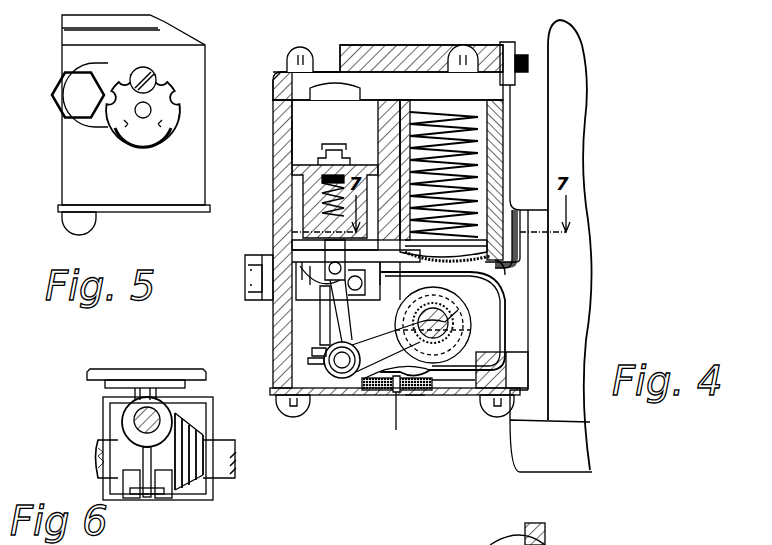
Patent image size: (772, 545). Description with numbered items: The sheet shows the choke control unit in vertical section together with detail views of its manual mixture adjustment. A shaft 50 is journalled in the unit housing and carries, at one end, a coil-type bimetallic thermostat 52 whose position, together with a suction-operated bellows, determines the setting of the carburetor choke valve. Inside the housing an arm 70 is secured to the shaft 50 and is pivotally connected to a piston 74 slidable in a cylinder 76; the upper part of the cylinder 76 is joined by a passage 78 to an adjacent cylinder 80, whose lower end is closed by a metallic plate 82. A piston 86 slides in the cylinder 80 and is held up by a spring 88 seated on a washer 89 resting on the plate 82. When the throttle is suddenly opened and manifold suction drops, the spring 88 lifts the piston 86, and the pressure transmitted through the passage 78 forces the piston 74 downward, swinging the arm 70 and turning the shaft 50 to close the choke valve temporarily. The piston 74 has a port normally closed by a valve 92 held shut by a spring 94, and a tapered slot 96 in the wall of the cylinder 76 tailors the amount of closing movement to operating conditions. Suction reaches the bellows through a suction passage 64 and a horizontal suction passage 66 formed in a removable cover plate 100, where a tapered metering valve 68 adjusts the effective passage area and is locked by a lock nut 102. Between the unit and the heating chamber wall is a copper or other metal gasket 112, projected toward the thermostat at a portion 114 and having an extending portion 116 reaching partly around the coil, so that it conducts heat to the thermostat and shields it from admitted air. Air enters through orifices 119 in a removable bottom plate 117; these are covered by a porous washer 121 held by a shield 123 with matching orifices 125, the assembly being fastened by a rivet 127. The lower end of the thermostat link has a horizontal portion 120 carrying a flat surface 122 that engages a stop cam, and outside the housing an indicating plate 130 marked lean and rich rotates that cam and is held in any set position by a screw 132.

In FIG. 6, the shaft 50 is at (105, 440).
In FIG. 4, the shaft 50 is at (455, 305).
In FIG. 6, the bimetallic thermostat 52 is at (195, 428).
In FIG. 4, the bimetallic thermostat 52 is at (450, 360).
In FIG. 4, the suction passage 64 is at (401, 535).
In FIG. 4, the horizontal suction passage 66 is at (417, 534).
In FIG. 4, the tapered metering valve 68 is at (522, 57).
In FIG. 4, the arm 70 is at (375, 333).
In FIG. 4, the piston 74 is at (295, 205).
In FIG. 4, the cylinder 76 is at (300, 143).
In FIG. 4, the passage 78 is at (385, 128).
In FIG. 4, the cylinder 80 is at (466, 128).
In FIG. 4, the metallic plate 82 is at (482, 270).
In FIG. 4, the piston 86 is at (392, 147).
In FIG. 4, the spring 88 is at (475, 188).
In FIG. 4, the washer 89 is at (490, 208).
In FIG. 4, the valve 92 is at (330, 152).
In FIG. 4, the spring 94 is at (326, 203).
In FIG. 4, the tapered slot 96 is at (292, 107).
In FIG. 4, the removable cover plate 100 is at (425, 75).
In FIG. 4, the lock nut 102 is at (504, 40).
In FIG. 4, the metal gasket 112 is at (521, 265).
In FIG. 4, the projected portion of gasket 114 is at (500, 312).
In FIG. 4, the extending portion 116 is at (364, 267).
In FIG. 4, the removable bottom plate 117 is at (318, 398).
In FIG. 4, the orifices 119 is at (416, 398).
In FIG. 4, the horizontal portion 120 is at (308, 371).
In FIG. 4, the porous washer 121 is at (435, 388).
In FIG. 4, the flat surface 122 is at (318, 340).
In FIG. 4, the shield 123 is at (385, 375).
In FIG. 4, the orifices 125 is at (431, 339).
In FIG. 4, the rivet 127 is at (400, 421).
In FIG. 5, the indicating plate 130 is at (141, 145).
In FIG. 5, the screw 132 is at (156, 75).